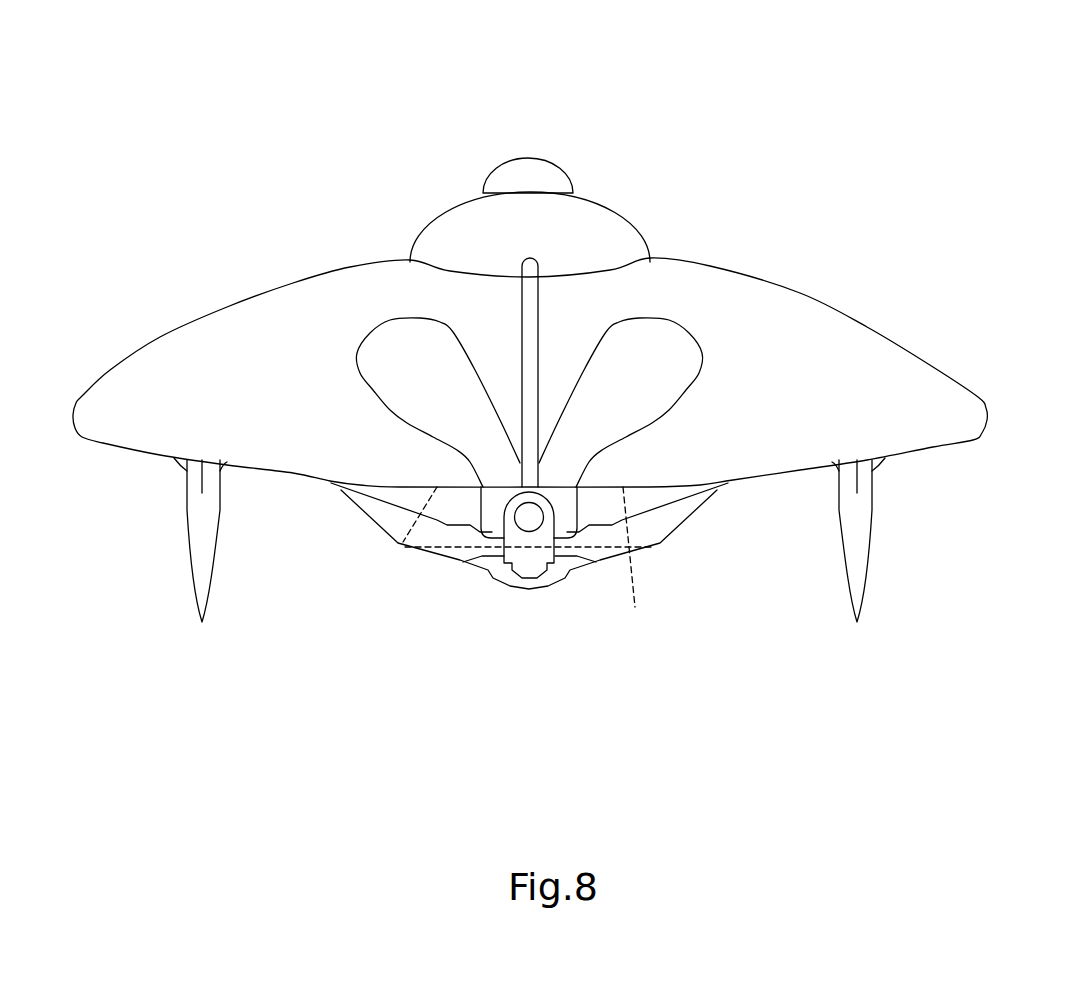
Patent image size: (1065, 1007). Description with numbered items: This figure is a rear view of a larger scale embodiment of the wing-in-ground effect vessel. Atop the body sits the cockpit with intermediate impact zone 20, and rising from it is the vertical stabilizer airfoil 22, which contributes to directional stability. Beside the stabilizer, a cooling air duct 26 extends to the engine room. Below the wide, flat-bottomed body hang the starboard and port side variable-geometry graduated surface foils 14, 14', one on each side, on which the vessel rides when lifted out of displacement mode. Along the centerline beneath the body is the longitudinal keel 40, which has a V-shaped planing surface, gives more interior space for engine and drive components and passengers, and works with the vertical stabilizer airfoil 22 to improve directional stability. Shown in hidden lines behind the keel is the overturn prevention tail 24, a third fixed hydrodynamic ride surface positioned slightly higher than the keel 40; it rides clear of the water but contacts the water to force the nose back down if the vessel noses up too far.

The cockpit with intermediate impact zone 20 is at (523, 185).
The vertical stabilizer airfoil 22 is at (537, 293).
The cooling air duct 26 is at (685, 335).
The starboard side variable-geometry graduated surface foil 14 is at (943, 540).
The port side variable-geometry graduated surface foil 14' is at (297, 540).
The keel 40 is at (677, 508).
The overturn prevention tail 24 is at (635, 607).